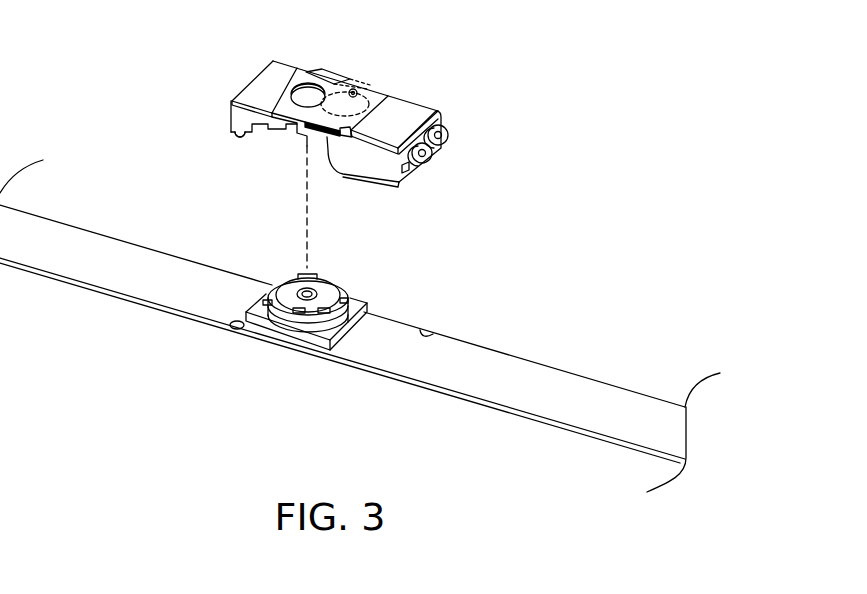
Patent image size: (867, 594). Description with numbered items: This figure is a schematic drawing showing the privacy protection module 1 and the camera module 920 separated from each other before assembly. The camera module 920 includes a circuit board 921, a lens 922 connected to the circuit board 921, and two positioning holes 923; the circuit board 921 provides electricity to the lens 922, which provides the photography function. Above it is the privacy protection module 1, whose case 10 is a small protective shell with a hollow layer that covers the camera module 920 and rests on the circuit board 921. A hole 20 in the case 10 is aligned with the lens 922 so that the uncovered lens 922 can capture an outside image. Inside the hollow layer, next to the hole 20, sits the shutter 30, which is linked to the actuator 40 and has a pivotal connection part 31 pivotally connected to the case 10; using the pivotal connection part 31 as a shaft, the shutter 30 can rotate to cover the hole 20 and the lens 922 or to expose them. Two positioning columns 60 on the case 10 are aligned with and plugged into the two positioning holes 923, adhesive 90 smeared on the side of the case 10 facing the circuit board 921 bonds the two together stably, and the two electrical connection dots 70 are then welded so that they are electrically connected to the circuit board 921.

The privacy protection module 1 is at (436, 74).
The case 10 is at (253, 87).
The hole 20 is at (303, 86).
The shutter 30 is at (340, 112).
The pivotal connection part 31 is at (355, 90).
The actuator 40 is at (322, 81).
The positioning columns 60 is at (240, 138).
The electrical connection dots 70 is at (446, 135).
The adhesive 90 is at (373, 181).
The camera module 920 is at (250, 408).
The circuit board 921 is at (523, 402).
The lens 922 is at (293, 288).
The positioning holes 923 is at (231, 329).